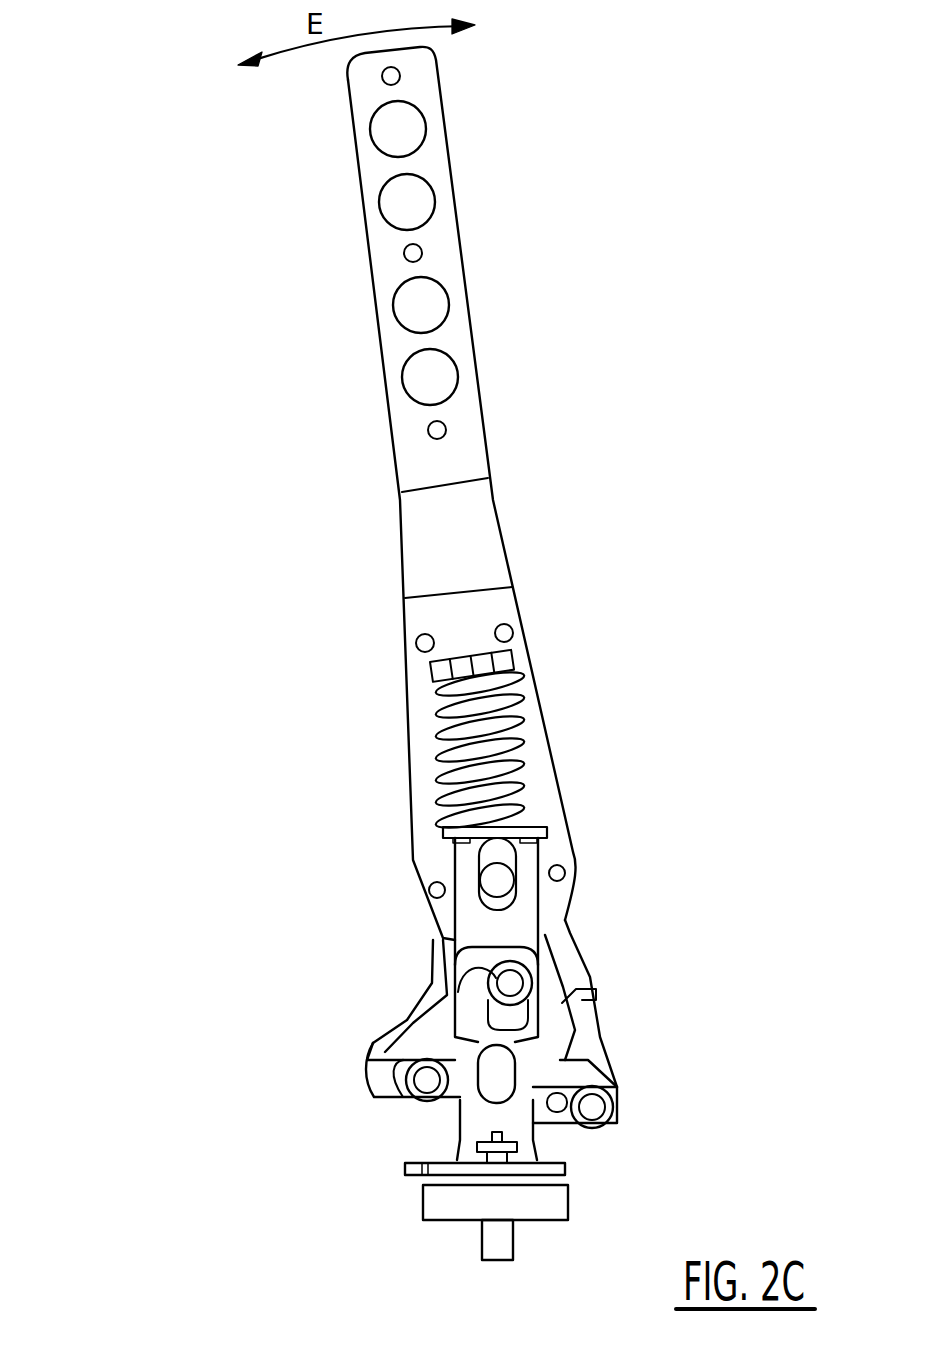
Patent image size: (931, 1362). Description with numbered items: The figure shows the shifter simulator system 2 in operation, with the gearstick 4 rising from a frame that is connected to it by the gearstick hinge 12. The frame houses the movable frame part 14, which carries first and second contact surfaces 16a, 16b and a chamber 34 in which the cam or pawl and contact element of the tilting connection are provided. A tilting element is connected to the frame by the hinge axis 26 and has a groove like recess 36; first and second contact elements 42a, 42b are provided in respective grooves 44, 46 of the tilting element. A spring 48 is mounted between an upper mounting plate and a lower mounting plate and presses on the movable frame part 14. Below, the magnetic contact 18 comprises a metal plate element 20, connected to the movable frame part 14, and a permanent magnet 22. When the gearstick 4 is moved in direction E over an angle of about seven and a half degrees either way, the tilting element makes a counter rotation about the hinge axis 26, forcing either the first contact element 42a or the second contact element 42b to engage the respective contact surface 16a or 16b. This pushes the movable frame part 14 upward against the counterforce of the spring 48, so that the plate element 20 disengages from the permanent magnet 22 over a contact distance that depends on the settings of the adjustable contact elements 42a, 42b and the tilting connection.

The shifter simulator system 2 is at (198, 200).
The gearstick 4 is at (382, 242).
The gearstick hinge 12 is at (495, 873).
The movable frame part 14 is at (565, 996).
The first contact surface 16a is at (390, 1077).
The second contact surface 16b is at (612, 1080).
The magnetic contact 18 is at (610, 1205).
The metal plate element 20 is at (425, 1166).
The permanent magnet 22 is at (453, 1210).
The hinge axis 26 is at (503, 1072).
The chamber 34 is at (477, 962).
The groove like recess 36 is at (493, 1010).
The first contact element 42a is at (420, 1095).
The second contact element 42b is at (608, 1122).
The groove 44 is at (400, 1073).
The groove 46 is at (560, 1100).
The spring 48 is at (512, 700).